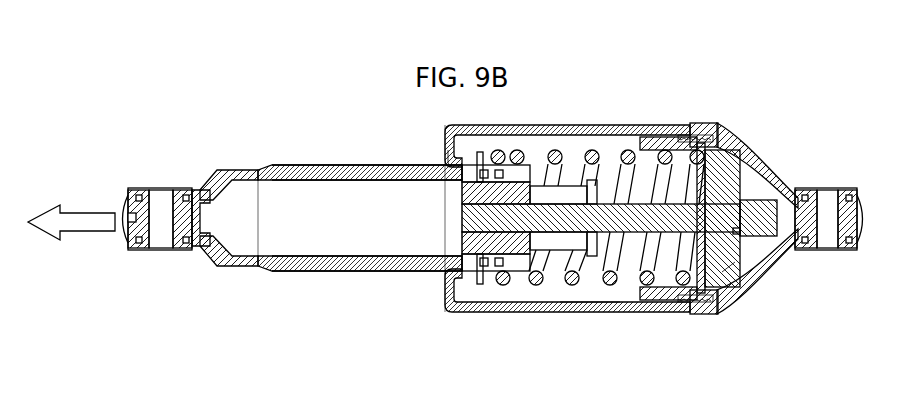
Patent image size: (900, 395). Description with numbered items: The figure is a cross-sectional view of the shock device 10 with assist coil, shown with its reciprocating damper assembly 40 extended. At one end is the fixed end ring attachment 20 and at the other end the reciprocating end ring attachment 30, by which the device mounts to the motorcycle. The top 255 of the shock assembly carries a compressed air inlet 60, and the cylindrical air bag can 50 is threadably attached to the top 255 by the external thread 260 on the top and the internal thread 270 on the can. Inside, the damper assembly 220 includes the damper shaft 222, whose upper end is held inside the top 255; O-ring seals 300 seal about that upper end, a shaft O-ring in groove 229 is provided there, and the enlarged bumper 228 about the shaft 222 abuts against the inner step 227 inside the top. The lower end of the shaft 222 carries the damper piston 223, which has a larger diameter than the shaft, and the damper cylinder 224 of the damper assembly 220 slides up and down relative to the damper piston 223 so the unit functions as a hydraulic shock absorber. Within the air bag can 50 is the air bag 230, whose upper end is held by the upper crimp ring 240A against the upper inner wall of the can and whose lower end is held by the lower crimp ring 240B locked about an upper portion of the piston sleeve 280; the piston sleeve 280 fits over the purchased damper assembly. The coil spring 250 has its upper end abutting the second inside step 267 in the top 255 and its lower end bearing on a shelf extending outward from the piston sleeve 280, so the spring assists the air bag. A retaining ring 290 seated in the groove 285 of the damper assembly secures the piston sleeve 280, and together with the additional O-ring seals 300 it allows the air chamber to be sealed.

The shock device with assist coil 10 is at (717, 102).
The fixed end ring attachment 20 is at (822, 210).
The reciprocating end ring attachment 30 is at (160, 192).
The reciprocating damper assembly 40 is at (304, 322).
The air bag can 50 is at (467, 305).
The compressed air inlet 60 is at (730, 182).
The damper assembly 220 is at (217, 273).
The damper shaft 222 is at (568, 215).
The damper piston 223 is at (462, 183).
The damper cylinder 224 is at (258, 205).
The inner step 227 is at (723, 273).
The bumper 228 is at (735, 200).
The shaft O-ring in groove 229 is at (755, 240).
The air bag 230 is at (592, 302).
The upper crimp ring 240A is at (672, 304).
The lower crimp ring 240B is at (463, 160).
The coil spring 250 is at (614, 296).
The top of shock assembly 255 is at (745, 172).
The external thread on top of shock 260 is at (708, 300).
The second inside step 267 is at (716, 135).
The internal thread on air bag can 270 is at (683, 300).
The piston sleeve 280 is at (420, 273).
The groove for retaining ring 285 is at (594, 168).
The retaining ring 290 is at (586, 184).
The O-ring seals 300 is at (498, 267).